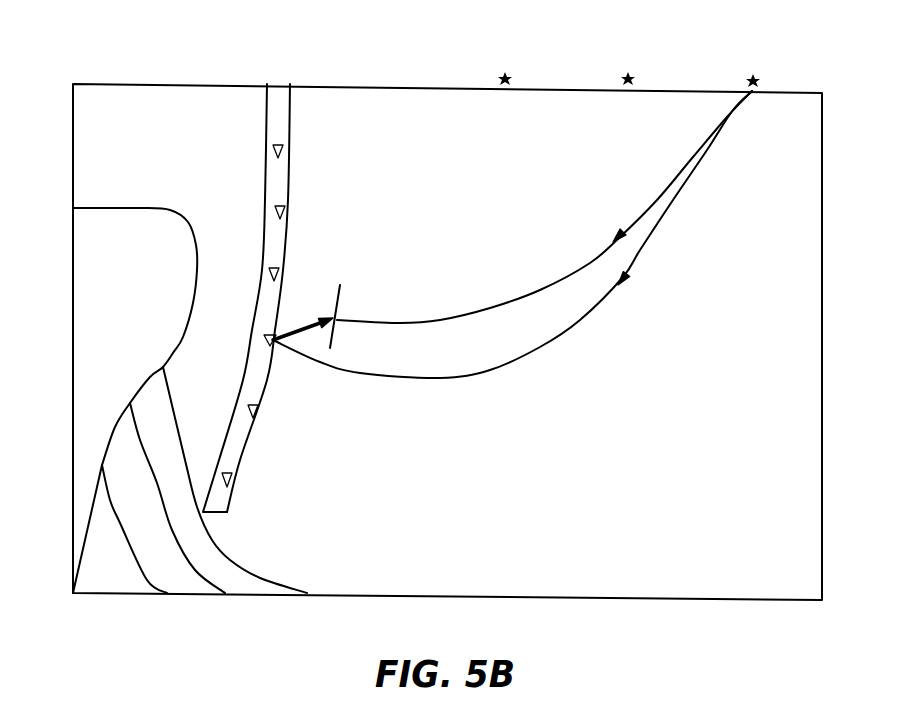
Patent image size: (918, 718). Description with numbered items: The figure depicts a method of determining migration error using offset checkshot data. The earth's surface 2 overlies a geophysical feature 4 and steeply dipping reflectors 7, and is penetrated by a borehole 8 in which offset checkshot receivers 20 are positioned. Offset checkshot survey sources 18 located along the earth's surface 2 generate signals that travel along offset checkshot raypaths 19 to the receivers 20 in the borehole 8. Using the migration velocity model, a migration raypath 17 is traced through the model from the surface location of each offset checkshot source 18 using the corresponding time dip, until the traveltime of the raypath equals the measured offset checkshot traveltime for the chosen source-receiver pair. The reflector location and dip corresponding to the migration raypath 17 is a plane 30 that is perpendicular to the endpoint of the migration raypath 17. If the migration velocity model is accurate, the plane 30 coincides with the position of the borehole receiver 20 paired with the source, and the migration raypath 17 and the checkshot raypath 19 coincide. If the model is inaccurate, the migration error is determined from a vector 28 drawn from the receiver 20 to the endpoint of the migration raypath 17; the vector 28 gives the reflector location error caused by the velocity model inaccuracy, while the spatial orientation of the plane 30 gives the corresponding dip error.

The earth's surface 2 is at (786, 93).
The geophysical feature 4 is at (82, 264).
The steeply dipping reflectors 7 is at (147, 578).
The borehole 8 is at (240, 390).
The migration raypath 17 is at (485, 308).
The offset checkshot survey sources 18 is at (762, 57).
The offset checkshot raypaths 19 is at (530, 350).
The offset checkshot receivers 20 is at (288, 162).
The vector 28 is at (301, 324).
The plane 30 is at (334, 330).